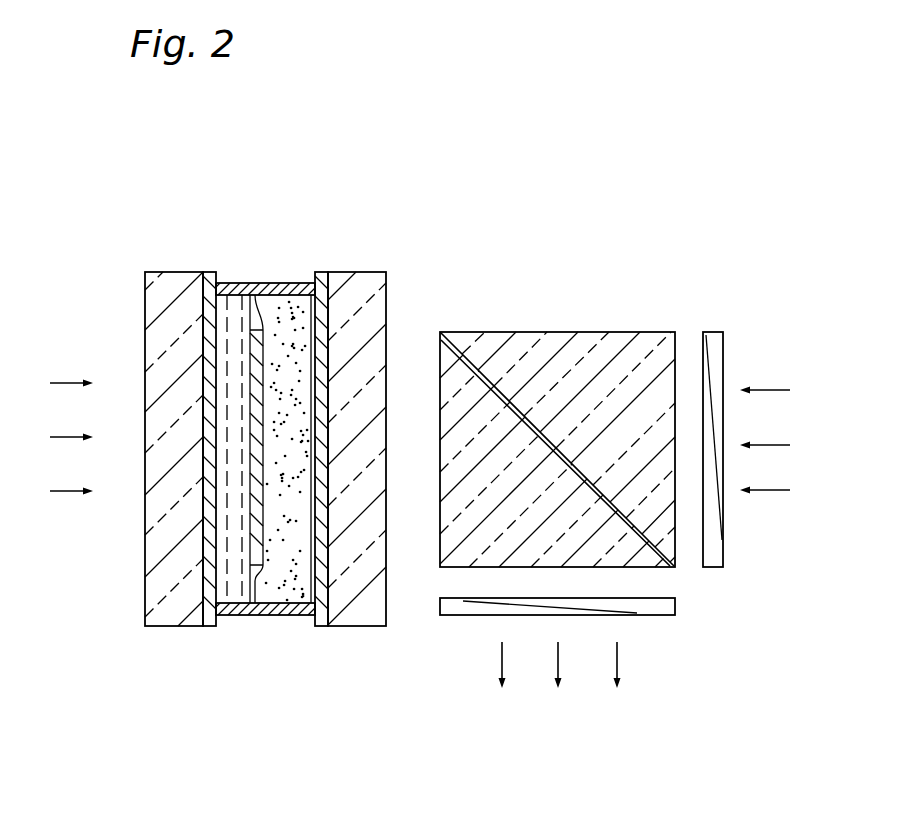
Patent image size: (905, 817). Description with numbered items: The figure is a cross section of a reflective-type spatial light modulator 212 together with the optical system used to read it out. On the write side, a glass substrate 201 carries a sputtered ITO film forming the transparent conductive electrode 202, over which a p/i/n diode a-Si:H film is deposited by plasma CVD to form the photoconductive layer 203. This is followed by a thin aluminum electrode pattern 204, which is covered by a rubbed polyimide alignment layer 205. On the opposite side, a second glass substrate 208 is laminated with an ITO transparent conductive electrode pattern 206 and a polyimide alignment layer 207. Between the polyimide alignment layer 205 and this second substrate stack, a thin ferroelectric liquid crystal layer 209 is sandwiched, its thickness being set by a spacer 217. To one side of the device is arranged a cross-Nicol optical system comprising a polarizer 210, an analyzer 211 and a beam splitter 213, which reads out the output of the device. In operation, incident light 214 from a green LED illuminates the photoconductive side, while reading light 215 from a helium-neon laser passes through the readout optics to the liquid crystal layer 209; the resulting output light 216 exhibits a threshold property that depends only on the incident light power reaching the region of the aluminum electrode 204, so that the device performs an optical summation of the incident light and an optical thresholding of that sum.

The glass substrate 201 is at (173, 278).
The transparent conductive electrode 202 is at (208, 276).
The photoconductive layer 203 is at (230, 616).
The aluminum electrode pattern 204 is at (263, 330).
The polyimide alignment layer 205 is at (255, 283).
The transparent conductive electrode pattern 206 is at (319, 272).
The polyimide alignment layer 207 is at (312, 616).
The glass substrate 208 is at (357, 278).
The ferroelectric liquid crystal layer 209 is at (277, 616).
The polarizer 210 is at (712, 338).
The analyzer 211 is at (677, 602).
The spatial light modulator 212 is at (400, 138).
The beam splitter 213 is at (604, 338).
The incident light 214 is at (65, 492).
The reading light 215 is at (770, 493).
The output light 216 is at (500, 655).
The spacer 217 is at (237, 283).